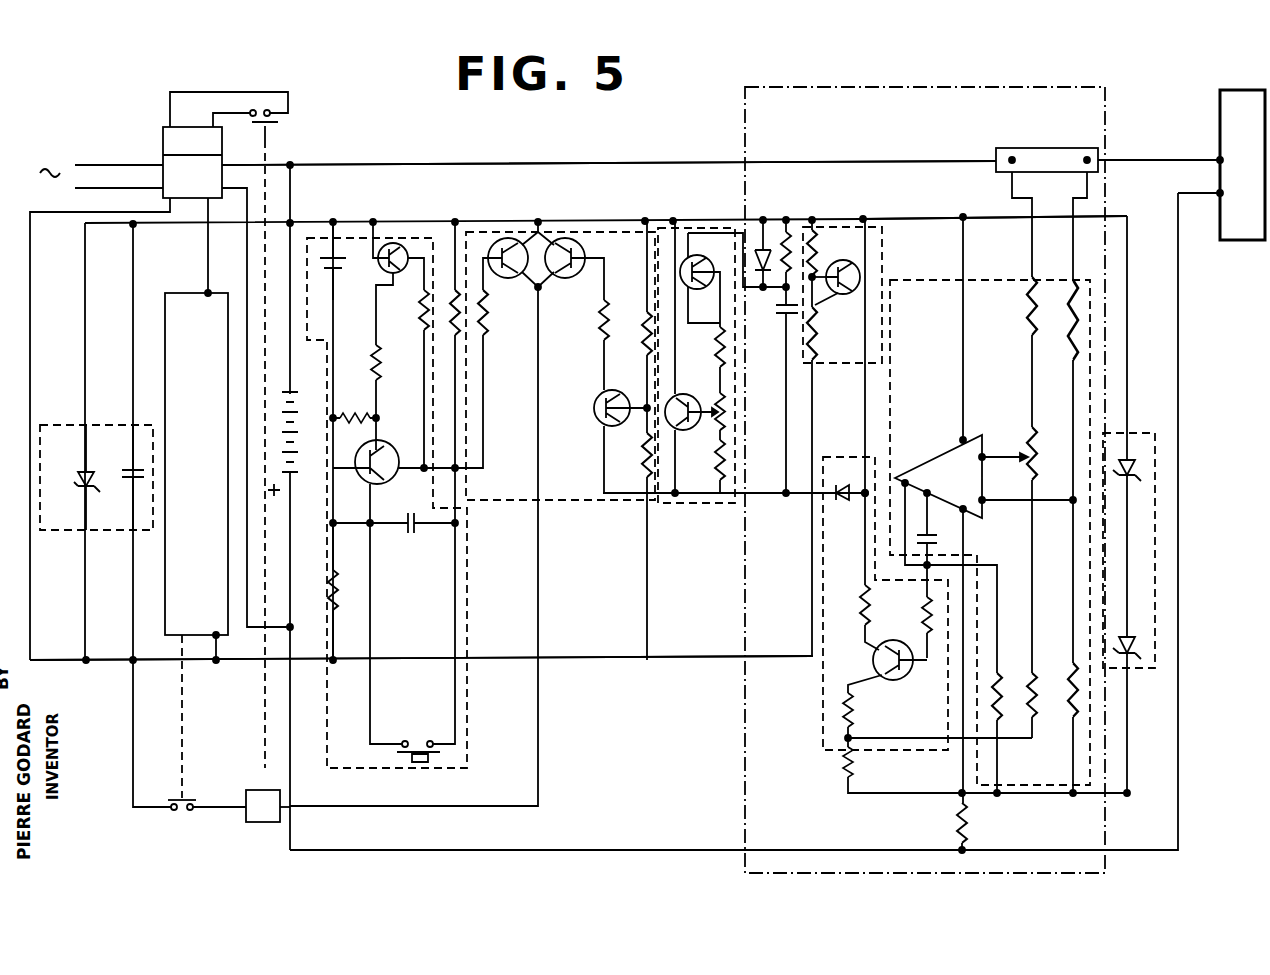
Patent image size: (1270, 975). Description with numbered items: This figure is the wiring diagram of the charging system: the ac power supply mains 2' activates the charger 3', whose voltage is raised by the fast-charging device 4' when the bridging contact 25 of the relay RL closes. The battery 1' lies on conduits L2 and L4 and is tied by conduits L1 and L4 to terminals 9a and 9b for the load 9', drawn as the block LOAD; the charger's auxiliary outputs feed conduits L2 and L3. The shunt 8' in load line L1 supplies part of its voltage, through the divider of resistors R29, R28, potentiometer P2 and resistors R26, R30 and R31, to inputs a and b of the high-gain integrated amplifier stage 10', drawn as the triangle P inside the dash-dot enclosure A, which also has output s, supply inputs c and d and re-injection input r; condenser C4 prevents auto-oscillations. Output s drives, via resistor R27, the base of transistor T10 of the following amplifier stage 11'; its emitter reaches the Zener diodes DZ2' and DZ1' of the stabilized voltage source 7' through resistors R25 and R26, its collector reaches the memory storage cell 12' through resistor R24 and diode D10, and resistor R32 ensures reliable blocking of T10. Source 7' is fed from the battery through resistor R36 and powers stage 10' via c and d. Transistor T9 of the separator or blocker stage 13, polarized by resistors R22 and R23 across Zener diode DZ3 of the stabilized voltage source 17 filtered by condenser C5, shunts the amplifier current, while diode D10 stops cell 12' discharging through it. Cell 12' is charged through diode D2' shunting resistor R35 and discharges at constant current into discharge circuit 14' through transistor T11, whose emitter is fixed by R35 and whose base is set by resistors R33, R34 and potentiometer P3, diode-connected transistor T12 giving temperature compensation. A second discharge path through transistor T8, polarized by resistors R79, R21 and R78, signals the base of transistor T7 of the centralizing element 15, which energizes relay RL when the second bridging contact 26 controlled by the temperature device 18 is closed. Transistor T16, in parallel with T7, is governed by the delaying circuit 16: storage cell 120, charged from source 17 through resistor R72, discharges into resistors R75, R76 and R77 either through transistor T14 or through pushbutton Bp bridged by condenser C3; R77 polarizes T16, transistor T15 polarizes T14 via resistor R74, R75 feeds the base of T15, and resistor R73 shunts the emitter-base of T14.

The control unit A is at (881, 85).
The fast-charging device 4' is at (203, 106).
The bridging contact 25 is at (282, 122).
The ac power supply mains 2' is at (119, 159).
The charger 3' is at (192, 162).
The load line L1 is at (973, 161).
The shunt 8' is at (1047, 136).
The load LOAD is at (1242, 165).
The load 9' is at (1200, 103).
The terminal 9a is at (1220, 157).
The terminal 9b is at (1220, 194).
The conduit L2 is at (976, 214).
The conduit L3 is at (510, 658).
The conduit L4 is at (672, 850).
The separator or blocker stage 13 is at (870, 232).
The amplifier stage 10' is at (990, 505).
The amplifier stage 11' is at (861, 607).
The source of stabilized voltage 7' is at (1160, 550).
The source of stabilized voltage 17 is at (72, 412).
The delaying circuit 16 is at (364, 231).
The centralizing element 15 is at (586, 218).
The discharge circuit 14' is at (696, 393).
The Zener diode DZ3 is at (80, 474).
The shunting condenser C5 is at (127, 469).
The temperature differential response device 18 is at (205, 425).
The second bridging contact 26 is at (182, 812).
The relay RL is at (268, 822).
The battery 1' is at (298, 447).
The storage cell 120 is at (338, 270).
The transistor T15 is at (398, 274).
The resistor R75 is at (383, 372).
The resistor R74 is at (424, 333).
The resistor R73 is at (355, 414).
The transistor T14 is at (352, 490).
The condenser C3 is at (415, 534).
The resistor R72 is at (330, 582).
The pushbutton Bp is at (418, 769).
The transistor T16 is at (518, 240).
The transistor T7 is at (566, 240).
The resistor R77 is at (489, 296).
The resistor R76 is at (457, 335).
The resistor R78 is at (602, 320).
The resistor R79 is at (645, 352).
The transistor T8 is at (594, 412).
The resistor R21 is at (646, 470).
The transistor T11 is at (697, 426).
The variable potentiometer P3 is at (726, 412).
The resistor R33 is at (724, 474).
The resistor R34 is at (726, 355).
The transistor T12 is at (698, 255).
The diode D2' is at (781, 234).
The resistor R35 is at (794, 220).
The memory storage cell 12' is at (768, 307).
The resistor R23 is at (822, 242).
The transistor T9 is at (844, 296).
The resistor R22 is at (824, 352).
The diode D10 is at (836, 496).
The operational amplifier P is at (956, 485).
The supply input d is at (969, 425).
The input a is at (990, 446).
The input b is at (990, 492).
The supply input c is at (971, 524).
The output s is at (899, 492).
The re-injection input r is at (932, 508).
The condenser C4 is at (946, 544).
The potentiometer P2 is at (1032, 454).
The resistor R29 is at (1028, 308).
The resistor R31 is at (1076, 336).
The Zener diode DZ1' is at (1167, 456).
The Zener diode DZ2' is at (1170, 640).
The resistor R24 is at (858, 620).
The resistor R27 is at (927, 596).
The transistor T10 is at (900, 680).
The resistor R25 is at (853, 716).
The resistor R26 is at (856, 762).
The resistor R32 is at (1012, 702).
The resistor R28 is at (1046, 714).
The resistor R30 is at (1080, 692).
The resistor R36 is at (970, 816).